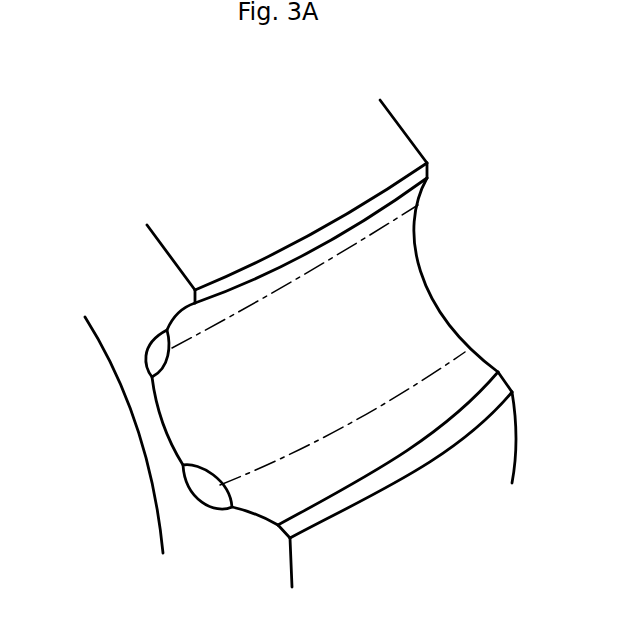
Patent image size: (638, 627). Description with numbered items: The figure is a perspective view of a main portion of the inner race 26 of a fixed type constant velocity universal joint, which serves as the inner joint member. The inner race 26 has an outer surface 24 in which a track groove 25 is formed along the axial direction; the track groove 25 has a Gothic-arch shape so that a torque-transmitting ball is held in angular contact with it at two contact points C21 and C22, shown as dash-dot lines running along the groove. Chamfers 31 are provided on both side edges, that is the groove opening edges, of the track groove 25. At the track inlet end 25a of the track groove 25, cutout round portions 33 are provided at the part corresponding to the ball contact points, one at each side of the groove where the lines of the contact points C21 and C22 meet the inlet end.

The outer surface 24 is at (492, 453).
The track groove 25 is at (405, 312).
The track inlet end 25a is at (152, 421).
The inner race 26 is at (418, 145).
The chamfer 31 is at (320, 234).
The cutout round portion 33 is at (158, 350).
The contact point C21 is at (370, 415).
The contact point C22 is at (255, 303).